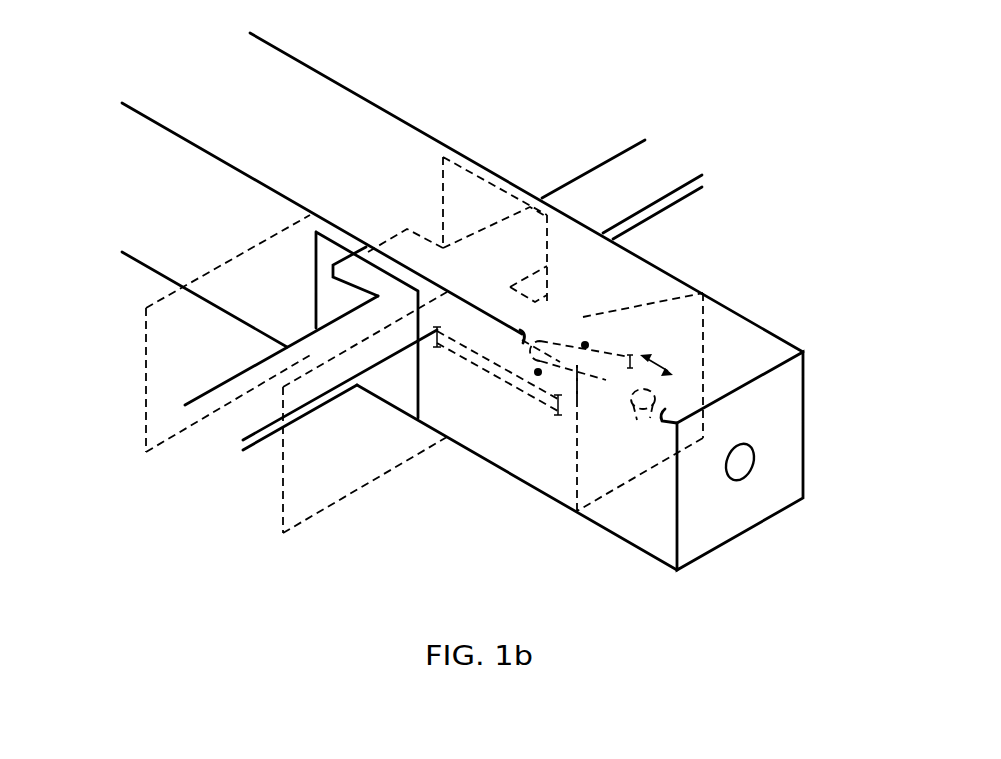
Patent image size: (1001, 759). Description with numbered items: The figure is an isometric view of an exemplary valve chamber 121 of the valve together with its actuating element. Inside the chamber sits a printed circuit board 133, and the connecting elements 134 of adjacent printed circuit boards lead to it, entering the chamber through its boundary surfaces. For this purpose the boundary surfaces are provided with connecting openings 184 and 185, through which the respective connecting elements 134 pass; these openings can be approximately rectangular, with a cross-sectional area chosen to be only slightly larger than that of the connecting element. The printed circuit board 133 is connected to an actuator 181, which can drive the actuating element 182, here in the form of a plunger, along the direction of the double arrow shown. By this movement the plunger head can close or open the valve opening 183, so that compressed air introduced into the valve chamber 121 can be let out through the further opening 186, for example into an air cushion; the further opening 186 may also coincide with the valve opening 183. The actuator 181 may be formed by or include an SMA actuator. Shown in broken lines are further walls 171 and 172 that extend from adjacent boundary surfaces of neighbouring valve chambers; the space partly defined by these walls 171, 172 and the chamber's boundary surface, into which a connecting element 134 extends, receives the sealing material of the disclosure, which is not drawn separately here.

The valve chamber 121 is at (767, 208).
The printed circuit board 133 is at (528, 314).
The connecting elements 134 is at (672, 168).
The wall 171 is at (358, 478).
The wall 172 is at (146, 330).
The actuator 181 is at (568, 340).
The actuating element 182 is at (615, 393).
The valve opening 183 is at (640, 416).
The connecting opening 184 is at (315, 243).
The connecting opening 185 is at (452, 168).
The further opening 186 is at (752, 455).